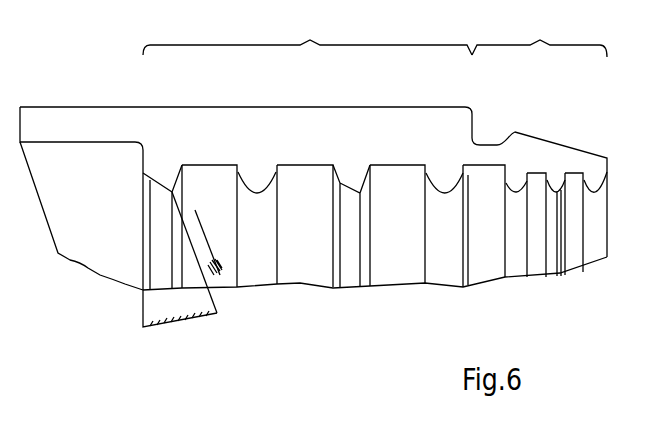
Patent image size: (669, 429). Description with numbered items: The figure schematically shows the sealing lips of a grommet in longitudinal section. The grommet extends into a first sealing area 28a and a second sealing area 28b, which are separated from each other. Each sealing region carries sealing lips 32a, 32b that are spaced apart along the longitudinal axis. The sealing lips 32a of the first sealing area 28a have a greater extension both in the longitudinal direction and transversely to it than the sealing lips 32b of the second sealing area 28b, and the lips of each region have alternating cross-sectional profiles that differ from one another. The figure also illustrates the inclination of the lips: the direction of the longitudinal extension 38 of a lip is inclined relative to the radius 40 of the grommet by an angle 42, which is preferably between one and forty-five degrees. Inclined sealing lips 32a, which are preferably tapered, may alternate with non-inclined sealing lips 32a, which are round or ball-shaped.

The first sealing area 28a is at (307, 31).
The second sealing area 28b is at (539, 32).
The sealing lips 32a is at (165, 172).
The sealing lips 32b is at (517, 178).
The direction of the longitudinal extension 38 is at (205, 238).
The radius 40 is at (142, 247).
The angle 42 is at (179, 327).